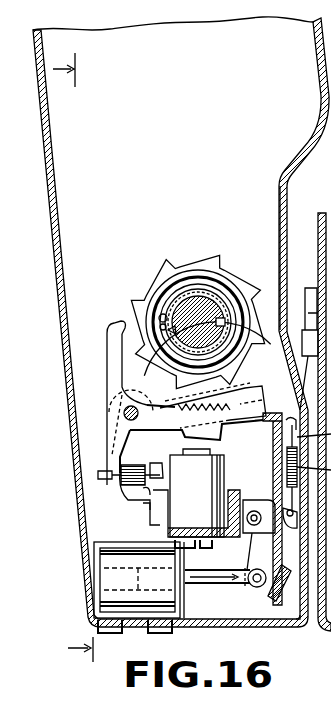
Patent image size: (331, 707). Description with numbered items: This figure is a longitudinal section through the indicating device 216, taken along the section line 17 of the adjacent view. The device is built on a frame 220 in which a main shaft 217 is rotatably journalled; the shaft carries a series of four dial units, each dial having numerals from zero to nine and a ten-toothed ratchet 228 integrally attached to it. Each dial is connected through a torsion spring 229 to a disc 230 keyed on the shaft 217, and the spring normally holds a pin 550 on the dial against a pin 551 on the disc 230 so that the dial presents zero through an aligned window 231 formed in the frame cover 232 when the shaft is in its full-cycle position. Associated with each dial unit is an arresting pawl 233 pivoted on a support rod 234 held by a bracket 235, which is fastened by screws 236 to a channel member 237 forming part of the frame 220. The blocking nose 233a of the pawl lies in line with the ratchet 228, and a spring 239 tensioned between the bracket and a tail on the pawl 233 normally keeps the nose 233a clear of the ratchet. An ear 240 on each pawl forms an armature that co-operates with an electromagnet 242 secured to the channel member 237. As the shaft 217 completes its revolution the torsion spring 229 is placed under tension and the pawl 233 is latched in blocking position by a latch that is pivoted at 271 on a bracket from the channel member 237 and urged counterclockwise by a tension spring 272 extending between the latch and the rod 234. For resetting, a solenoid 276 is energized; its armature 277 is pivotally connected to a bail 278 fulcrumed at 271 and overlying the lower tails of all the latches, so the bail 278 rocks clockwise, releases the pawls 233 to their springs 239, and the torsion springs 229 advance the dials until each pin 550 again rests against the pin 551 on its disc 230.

The section line 16—16 of Fig. 17 is at (71, 362).
The frame 220 is at (327, 82).
The frame cover 232 is at (287, 202).
The indicating device 216 is at (278, 641).
The window 231 is at (281, 313).
The ratchet 228 is at (222, 268).
The disc 230 is at (185, 300).
The torsion spring 229 is at (199, 278).
The main shaft 217 is at (205, 297).
The pin 551 is at (163, 314).
The pin 550 is at (168, 335).
The blocking nose 233a is at (122, 320).
The arresting pawl 233 is at (107, 338).
The support rod 234 is at (118, 413).
The ear 240 is at (206, 433).
The tension spring 272 is at (268, 416).
The spring 239 is at (120, 468).
The bracket 235 is at (143, 488).
The screws 236 is at (143, 503).
The channel member 237 is at (162, 528).
The electromagnet 242 is at (196, 493).
The pivot 271 is at (258, 506).
The solenoid 276 is at (117, 560).
The armature 277 is at (231, 597).
The bail 278 is at (287, 600).